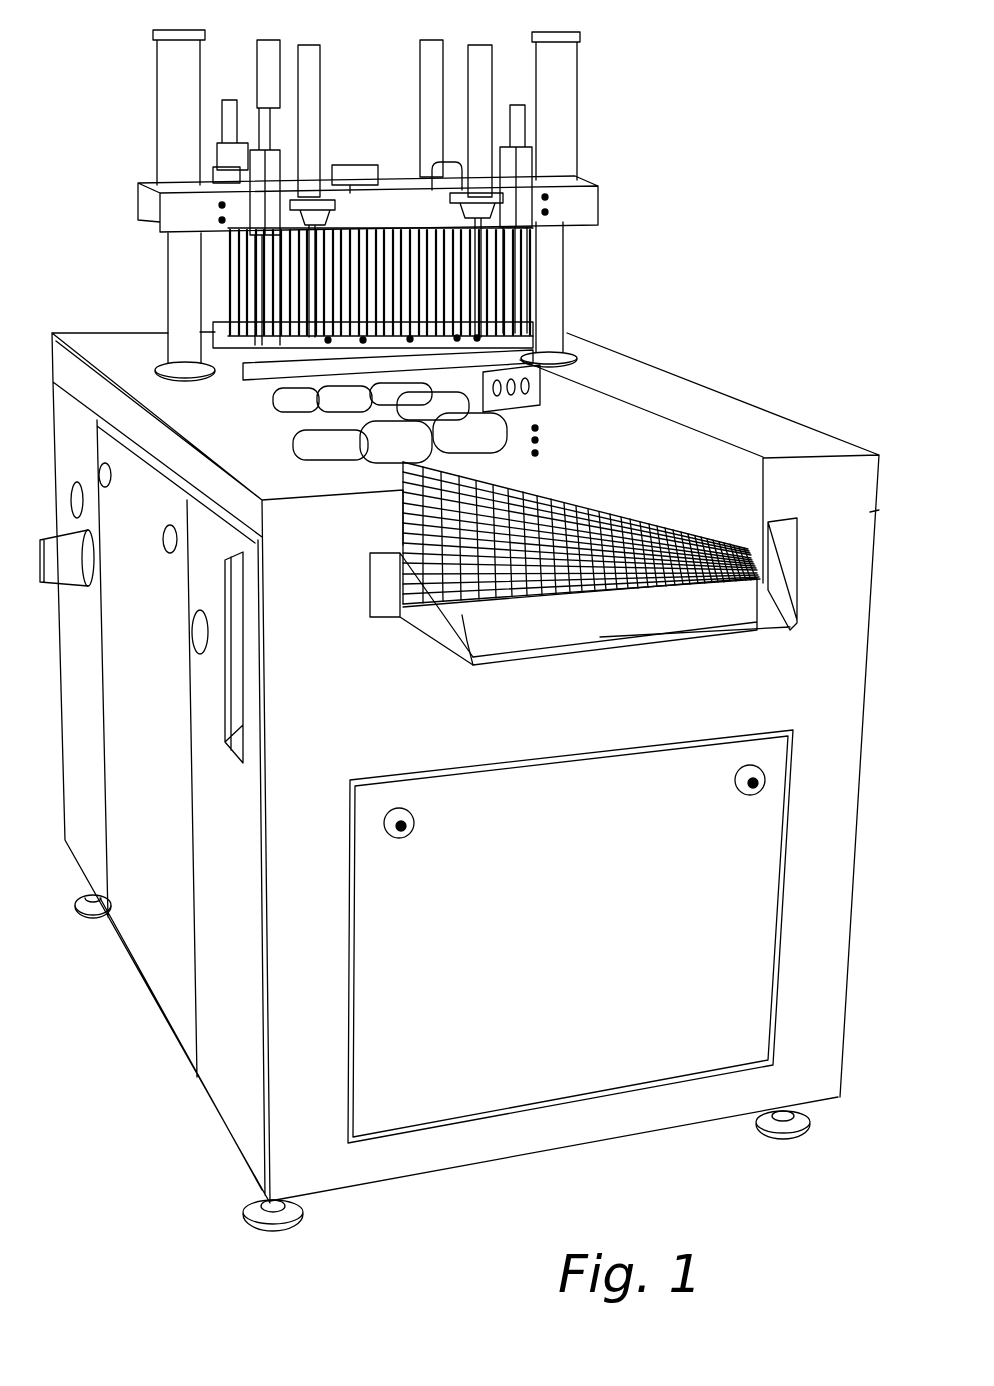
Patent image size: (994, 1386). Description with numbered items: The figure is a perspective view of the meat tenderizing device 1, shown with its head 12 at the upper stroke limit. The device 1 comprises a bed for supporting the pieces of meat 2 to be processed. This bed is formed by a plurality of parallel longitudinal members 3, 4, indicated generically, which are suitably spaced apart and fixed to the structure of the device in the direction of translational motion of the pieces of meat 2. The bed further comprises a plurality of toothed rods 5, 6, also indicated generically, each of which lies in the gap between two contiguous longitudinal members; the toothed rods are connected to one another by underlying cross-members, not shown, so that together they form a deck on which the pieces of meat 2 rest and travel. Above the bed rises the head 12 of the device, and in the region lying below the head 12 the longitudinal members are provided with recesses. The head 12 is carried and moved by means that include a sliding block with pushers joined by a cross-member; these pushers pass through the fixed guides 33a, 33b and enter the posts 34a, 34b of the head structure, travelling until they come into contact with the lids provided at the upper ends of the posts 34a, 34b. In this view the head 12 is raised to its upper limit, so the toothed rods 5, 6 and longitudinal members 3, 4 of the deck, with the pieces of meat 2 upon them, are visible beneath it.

The meat tenderizing device 1 is at (733, 395).
The pieces of meat 2 is at (343, 437).
The longitudinal member 3 is at (585, 570).
The longitudinal member 4 is at (646, 565).
The toothed rod 5 is at (465, 585).
The toothed rod 6 is at (503, 555).
The head 12 is at (607, 198).
The fixed guide 33a is at (182, 253).
The fixed guide 33b is at (557, 293).
The post 34a is at (168, 77).
The post 34b is at (563, 113).